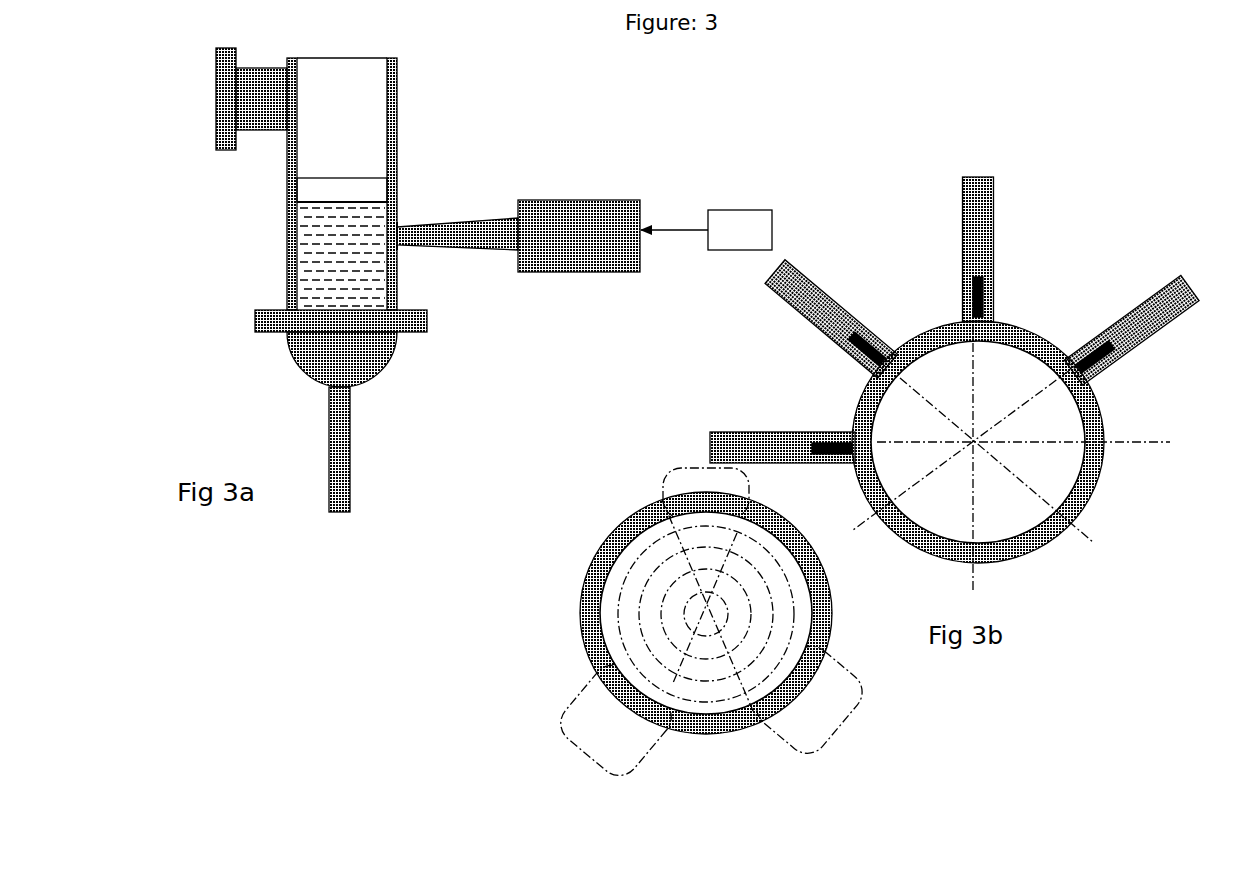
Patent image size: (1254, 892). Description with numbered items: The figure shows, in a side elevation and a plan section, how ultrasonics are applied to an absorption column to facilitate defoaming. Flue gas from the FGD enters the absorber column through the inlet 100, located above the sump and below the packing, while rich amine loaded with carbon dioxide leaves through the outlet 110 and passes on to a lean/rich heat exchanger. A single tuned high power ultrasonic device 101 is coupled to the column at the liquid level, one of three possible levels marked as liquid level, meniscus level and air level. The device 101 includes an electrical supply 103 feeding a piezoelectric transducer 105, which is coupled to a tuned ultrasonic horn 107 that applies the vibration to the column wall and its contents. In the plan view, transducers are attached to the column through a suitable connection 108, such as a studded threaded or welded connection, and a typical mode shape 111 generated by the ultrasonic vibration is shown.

In FIG. 3A, the inlet 100 is at (216, 100).
In FIG. 3A, the high power ultrasonic device 101 is at (400, 228).
In FIG. 3A, the electrical supply 103 is at (706, 230).
In FIG. 3A, the piezoelectric transducer 105 is at (590, 273).
In FIG. 3A, the tuned ultrasonic horn 107 is at (700, 422).
In FIG. 3B, the tuned ultrasonic horn 107 is at (782, 447).
In FIG. 3B, the connection 108 is at (994, 309).
In FIG. 3A, the outlet 110 is at (337, 525).
In FIG. 3B, the mode shape 111 is at (761, 724).